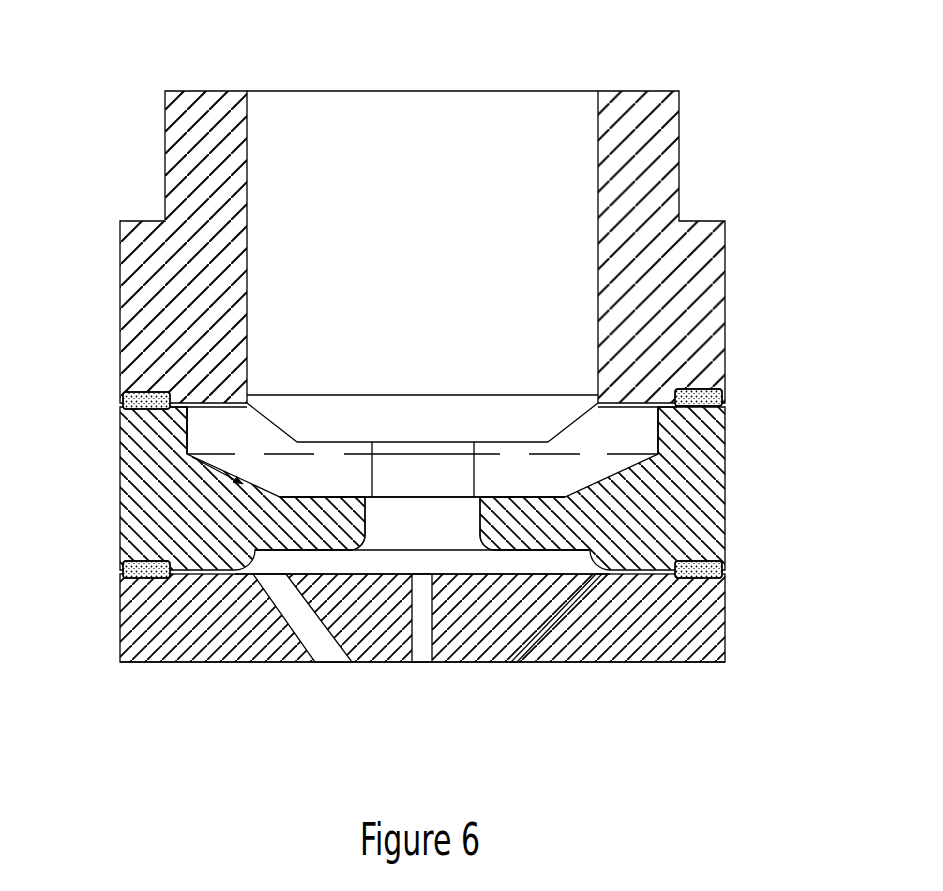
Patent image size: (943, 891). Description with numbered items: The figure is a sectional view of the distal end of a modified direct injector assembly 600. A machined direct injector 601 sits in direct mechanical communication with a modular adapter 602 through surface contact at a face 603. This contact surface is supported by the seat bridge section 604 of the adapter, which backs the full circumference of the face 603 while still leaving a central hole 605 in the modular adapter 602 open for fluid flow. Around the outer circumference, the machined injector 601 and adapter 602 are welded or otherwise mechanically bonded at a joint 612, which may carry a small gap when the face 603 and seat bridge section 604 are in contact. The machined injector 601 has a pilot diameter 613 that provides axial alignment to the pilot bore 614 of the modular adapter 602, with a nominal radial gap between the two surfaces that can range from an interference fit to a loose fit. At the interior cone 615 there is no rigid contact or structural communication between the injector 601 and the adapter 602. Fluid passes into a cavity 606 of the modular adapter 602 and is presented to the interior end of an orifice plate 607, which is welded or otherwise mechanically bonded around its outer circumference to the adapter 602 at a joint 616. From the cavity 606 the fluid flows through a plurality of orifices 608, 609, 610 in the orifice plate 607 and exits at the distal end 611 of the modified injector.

The modified direct injector assembly 600 is at (737, 78).
The machined direct injector 601 is at (119, 274).
The modular adapter 602 is at (119, 485).
The face 603 is at (365, 483).
The seat bridge section 604 is at (313, 553).
The central hole 605 is at (435, 533).
The cavity 606 is at (290, 566).
The orifice plate 607 is at (115, 618).
The orifice 608 is at (313, 632).
The orifice 609 is at (418, 630).
The orifice 610 is at (530, 632).
The distal end 611 is at (470, 680).
The joint 612 is at (119, 398).
The pilot diameter 613 is at (267, 419).
The pilot bore 614 is at (172, 438).
The interior cone 615 is at (263, 464).
The joint 616 is at (119, 570).